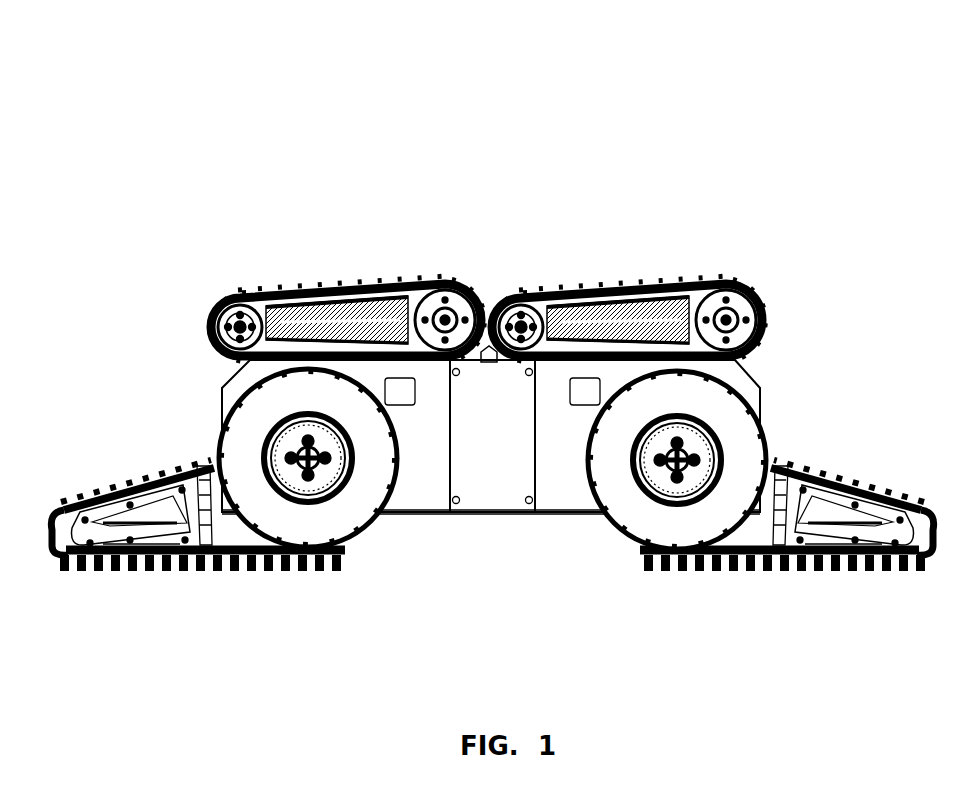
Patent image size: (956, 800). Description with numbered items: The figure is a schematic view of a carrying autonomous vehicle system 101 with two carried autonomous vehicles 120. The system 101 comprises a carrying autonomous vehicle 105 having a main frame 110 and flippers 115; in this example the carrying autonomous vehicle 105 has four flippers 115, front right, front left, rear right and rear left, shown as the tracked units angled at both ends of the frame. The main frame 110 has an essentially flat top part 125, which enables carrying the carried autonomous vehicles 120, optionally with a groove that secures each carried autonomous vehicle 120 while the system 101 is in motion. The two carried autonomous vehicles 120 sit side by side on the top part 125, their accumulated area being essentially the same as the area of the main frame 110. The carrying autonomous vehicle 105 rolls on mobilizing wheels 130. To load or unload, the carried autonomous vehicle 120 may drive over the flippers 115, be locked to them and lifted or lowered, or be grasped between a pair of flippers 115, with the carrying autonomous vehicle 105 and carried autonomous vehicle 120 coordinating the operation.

The carrying autonomous vehicle system 101 is at (492, 361).
The carrying autonomous vehicle 105 is at (190, 390).
The main frame 110 is at (433, 490).
The flipper 115 is at (648, 606).
The carried autonomous vehicle 120 is at (422, 261).
The top part 125 is at (487, 350).
The mobilizing wheel 130 is at (708, 508).